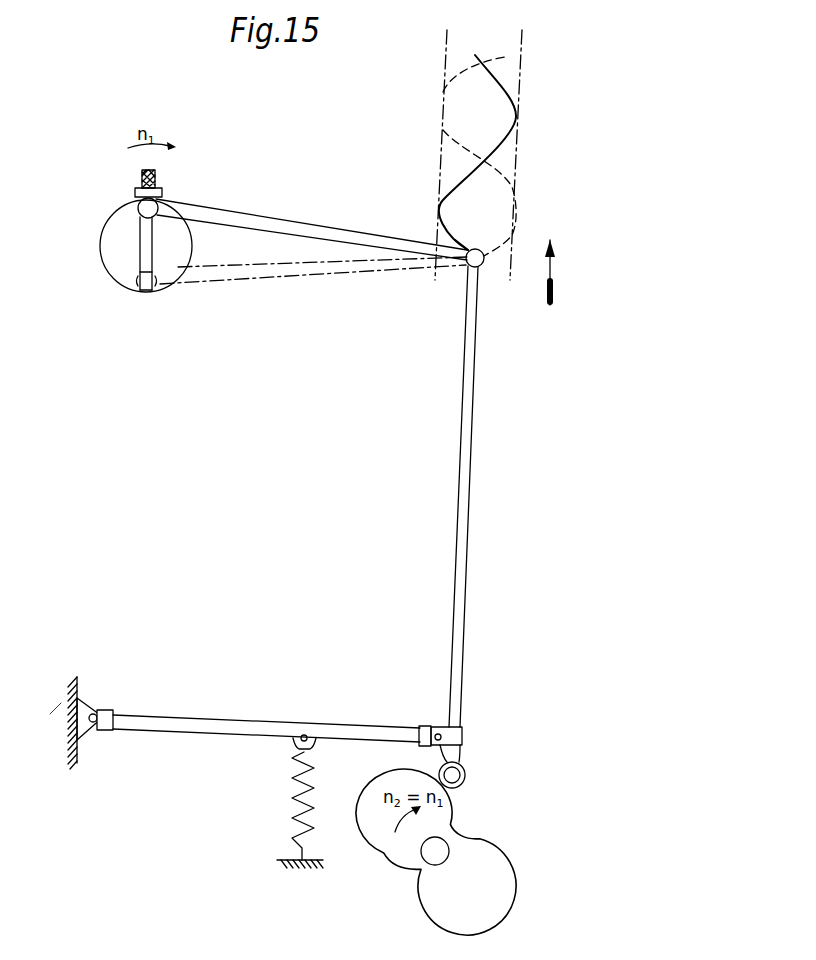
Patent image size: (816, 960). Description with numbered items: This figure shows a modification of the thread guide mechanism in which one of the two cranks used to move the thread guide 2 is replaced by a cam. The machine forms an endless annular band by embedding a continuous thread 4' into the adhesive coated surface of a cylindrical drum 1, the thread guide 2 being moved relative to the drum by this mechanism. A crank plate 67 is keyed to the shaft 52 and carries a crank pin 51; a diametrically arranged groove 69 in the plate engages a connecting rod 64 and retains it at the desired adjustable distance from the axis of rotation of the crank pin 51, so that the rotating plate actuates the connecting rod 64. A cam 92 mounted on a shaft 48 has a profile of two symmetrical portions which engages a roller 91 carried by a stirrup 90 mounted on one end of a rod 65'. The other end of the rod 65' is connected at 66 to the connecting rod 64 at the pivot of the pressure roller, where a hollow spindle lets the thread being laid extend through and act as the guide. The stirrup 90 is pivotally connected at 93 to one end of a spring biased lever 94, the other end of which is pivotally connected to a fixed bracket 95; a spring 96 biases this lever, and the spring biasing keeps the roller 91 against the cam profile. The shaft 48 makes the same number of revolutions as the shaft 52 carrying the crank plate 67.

The cylindrical drum 1 is at (521, 80).
The continuous thread 4' is at (496, 155).
The thread guide 2 is at (467, 268).
The articulation of the connecting rods 66 is at (482, 265).
The connecting rod 64 is at (297, 227).
The rod 65' is at (487, 496).
The crank pin 51 is at (140, 200).
The groove 69 is at (140, 232).
The shaft 52 is at (145, 245).
The crank plate 67 is at (125, 268).
The fixed bracket 95 is at (98, 713).
The spring biased lever 94 is at (352, 730).
The pivotal connection 93 is at (430, 727).
The stirrup 90 is at (458, 746).
The roller 91 is at (465, 780).
The spring 96 is at (290, 806).
The cam 92 is at (378, 862).
The shaft 48 is at (438, 852).